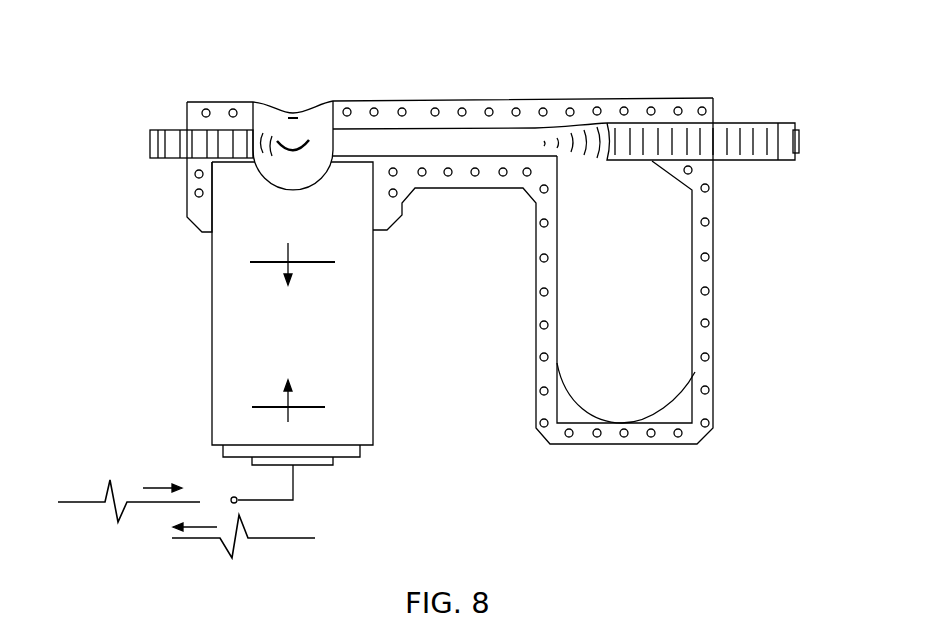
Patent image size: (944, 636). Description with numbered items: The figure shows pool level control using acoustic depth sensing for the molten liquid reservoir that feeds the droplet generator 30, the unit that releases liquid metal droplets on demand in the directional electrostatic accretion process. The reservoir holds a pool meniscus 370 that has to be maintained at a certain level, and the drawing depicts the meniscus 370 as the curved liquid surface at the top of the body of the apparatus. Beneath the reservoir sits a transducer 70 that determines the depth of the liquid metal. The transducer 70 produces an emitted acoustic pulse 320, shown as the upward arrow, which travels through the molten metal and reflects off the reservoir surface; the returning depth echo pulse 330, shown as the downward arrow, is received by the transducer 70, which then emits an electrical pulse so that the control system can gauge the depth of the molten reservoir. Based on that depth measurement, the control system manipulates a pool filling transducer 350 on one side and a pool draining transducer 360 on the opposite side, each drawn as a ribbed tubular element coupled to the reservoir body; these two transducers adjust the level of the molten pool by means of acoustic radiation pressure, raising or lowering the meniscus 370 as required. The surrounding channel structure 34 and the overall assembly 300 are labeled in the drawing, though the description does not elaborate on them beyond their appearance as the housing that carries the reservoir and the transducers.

The droplet generator 30 is at (212, 362).
The U-shaped channel member 34 is at (713, 303).
The transducer 70 is at (315, 465).
The sensor assembly 300 is at (509, 315).
The emitted acoustic pulse 320 is at (333, 403).
The depth echo pulse 330 is at (245, 263).
The pool filling transducer 350 is at (800, 142).
The pool draining transducer 360 is at (150, 143).
The pool meniscus 370 is at (313, 108).